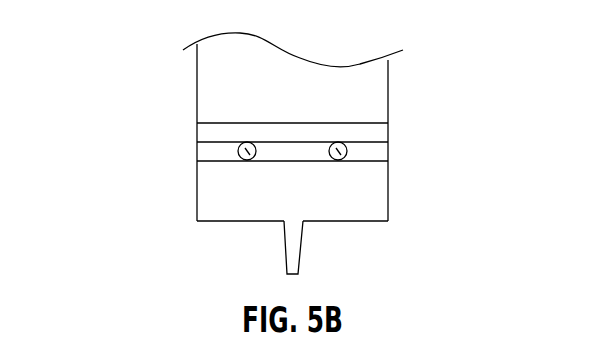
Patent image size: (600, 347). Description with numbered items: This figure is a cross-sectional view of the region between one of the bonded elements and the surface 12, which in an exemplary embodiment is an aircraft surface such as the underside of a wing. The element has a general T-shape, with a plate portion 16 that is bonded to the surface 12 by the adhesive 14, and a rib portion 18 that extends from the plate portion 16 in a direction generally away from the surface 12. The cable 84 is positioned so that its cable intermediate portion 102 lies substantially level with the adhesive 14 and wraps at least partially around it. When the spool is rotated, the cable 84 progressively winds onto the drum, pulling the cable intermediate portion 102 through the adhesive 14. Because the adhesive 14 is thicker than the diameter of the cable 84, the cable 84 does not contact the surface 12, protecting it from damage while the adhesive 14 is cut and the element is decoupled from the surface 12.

The surface 12 is at (377, 88).
The adhesive 14 is at (377, 134).
The plate portion 16 is at (371, 207).
The rib portion 18 is at (292, 240).
The cable 84 is at (274, 186).
The cable intermediate portion 102 is at (241, 158).